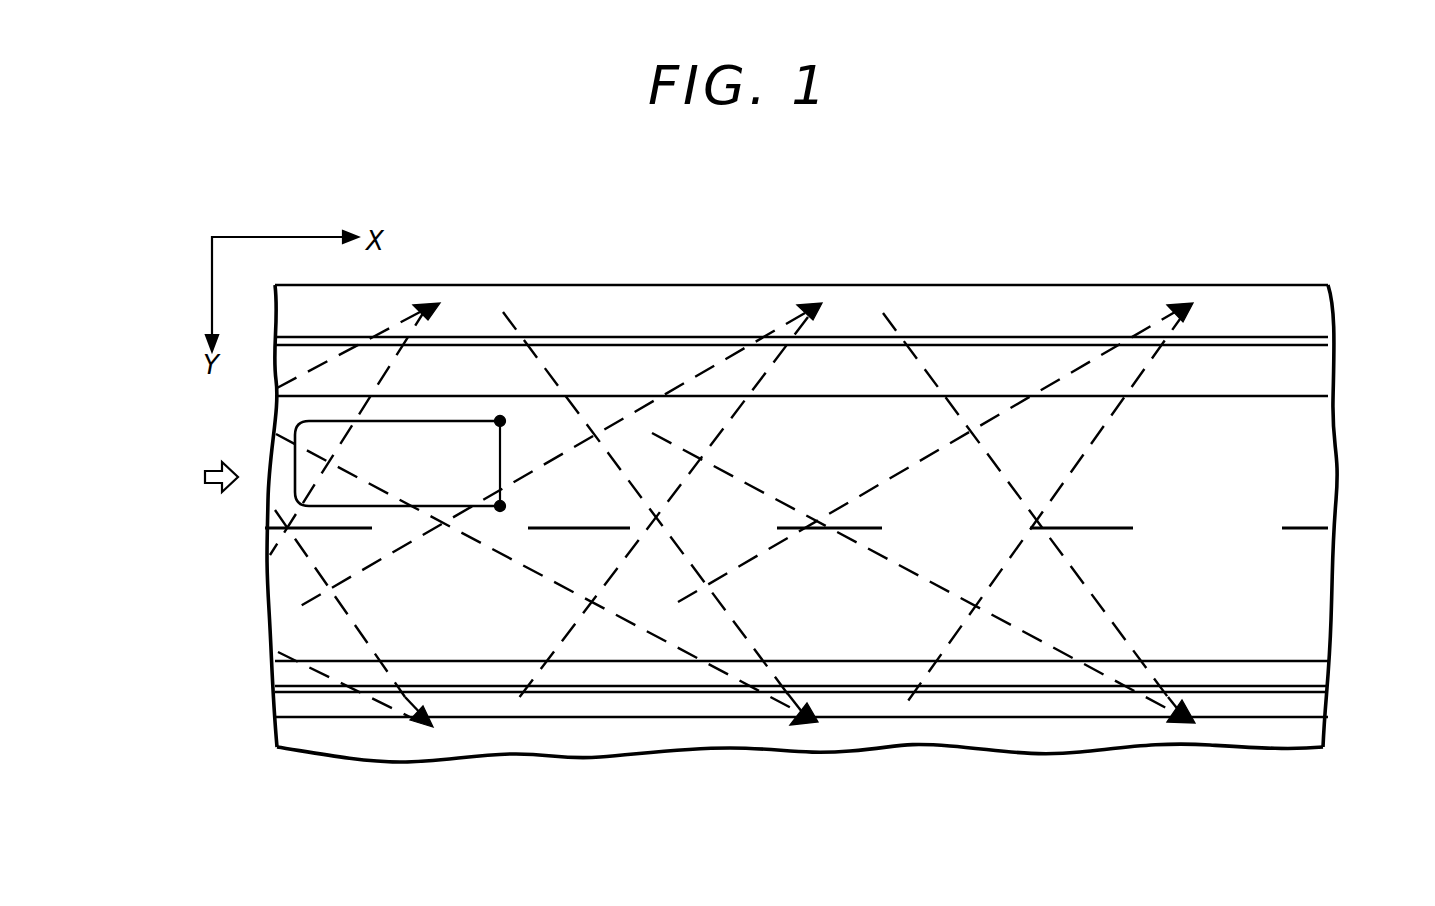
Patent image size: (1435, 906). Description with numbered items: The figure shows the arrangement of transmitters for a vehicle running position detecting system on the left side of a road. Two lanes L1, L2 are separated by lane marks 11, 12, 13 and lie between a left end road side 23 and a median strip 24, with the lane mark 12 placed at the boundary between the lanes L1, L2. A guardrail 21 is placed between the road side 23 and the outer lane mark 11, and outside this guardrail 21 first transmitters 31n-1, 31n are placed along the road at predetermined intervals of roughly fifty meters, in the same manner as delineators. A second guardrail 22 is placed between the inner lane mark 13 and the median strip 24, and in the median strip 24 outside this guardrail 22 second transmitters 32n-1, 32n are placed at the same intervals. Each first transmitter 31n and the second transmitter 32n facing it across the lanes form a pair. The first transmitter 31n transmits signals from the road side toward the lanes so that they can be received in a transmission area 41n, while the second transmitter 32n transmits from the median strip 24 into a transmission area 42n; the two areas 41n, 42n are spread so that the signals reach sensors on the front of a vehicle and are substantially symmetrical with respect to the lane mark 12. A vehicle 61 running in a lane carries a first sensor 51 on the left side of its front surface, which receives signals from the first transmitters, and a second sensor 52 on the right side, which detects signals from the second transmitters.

The outer lane mark 11 is at (1305, 394).
The lane mark 12 is at (1302, 528).
The inner lane mark 13 is at (1293, 660).
The guardrail 21 is at (1237, 337).
The guardrail 22 is at (280, 688).
The road side 23 is at (1204, 270).
The median strip 24 is at (1231, 733).
The first transmitter 31n-1 is at (425, 303).
The first transmitter 31n is at (807, 303).
The second transmitter 32n-1 is at (423, 722).
The second transmitter 32n is at (800, 723).
The transmission area 41n is at (726, 434).
The transmission area 42n is at (757, 625).
The first sensor 51 is at (499, 422).
The second sensor 52 is at (498, 504).
The vehicle 61 is at (295, 453).
The lane L1 is at (1300, 445).
The lane L2 is at (1303, 580).